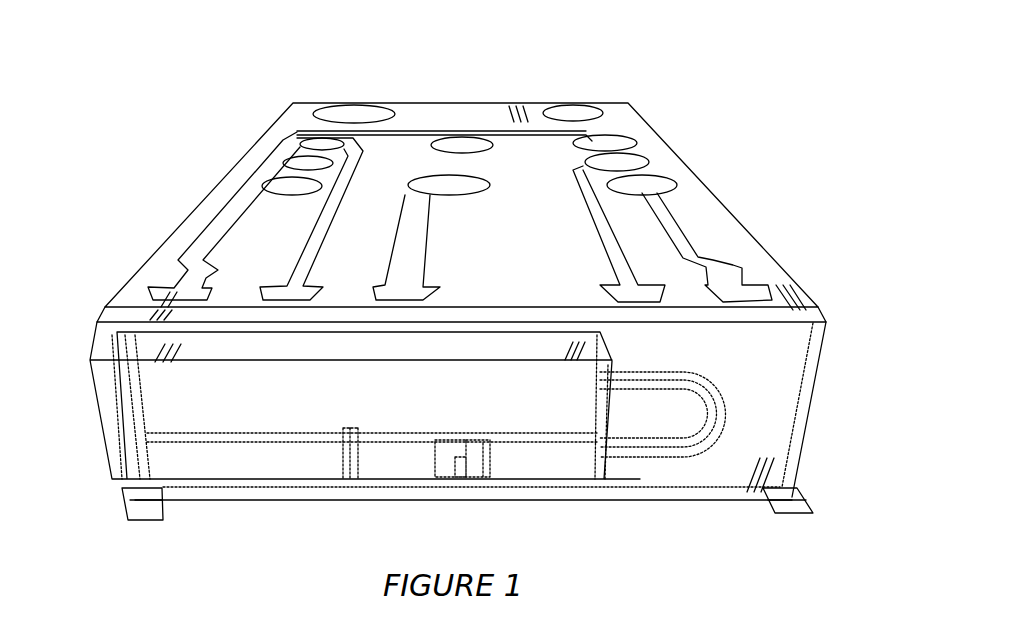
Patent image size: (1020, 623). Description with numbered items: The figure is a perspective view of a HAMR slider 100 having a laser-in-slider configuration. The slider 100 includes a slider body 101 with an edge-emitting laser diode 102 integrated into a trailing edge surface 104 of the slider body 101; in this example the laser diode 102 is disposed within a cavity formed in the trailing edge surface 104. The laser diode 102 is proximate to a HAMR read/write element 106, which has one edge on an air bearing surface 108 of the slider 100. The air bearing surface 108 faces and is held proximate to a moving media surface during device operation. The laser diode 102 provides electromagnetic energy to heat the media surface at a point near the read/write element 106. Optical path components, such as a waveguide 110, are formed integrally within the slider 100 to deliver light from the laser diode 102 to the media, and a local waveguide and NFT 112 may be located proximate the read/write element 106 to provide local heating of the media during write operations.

The slider 100 is at (444, 336).
The slider body 101 is at (147, 268).
The edge-emitting laser diode 102 is at (122, 452).
The trailing edge surface 104 is at (148, 522).
The HAMR read/write element 106 is at (470, 487).
The air bearing surface 108 is at (807, 513).
The waveguide 110 is at (668, 455).
The local waveguide and NFT 112 is at (458, 483).